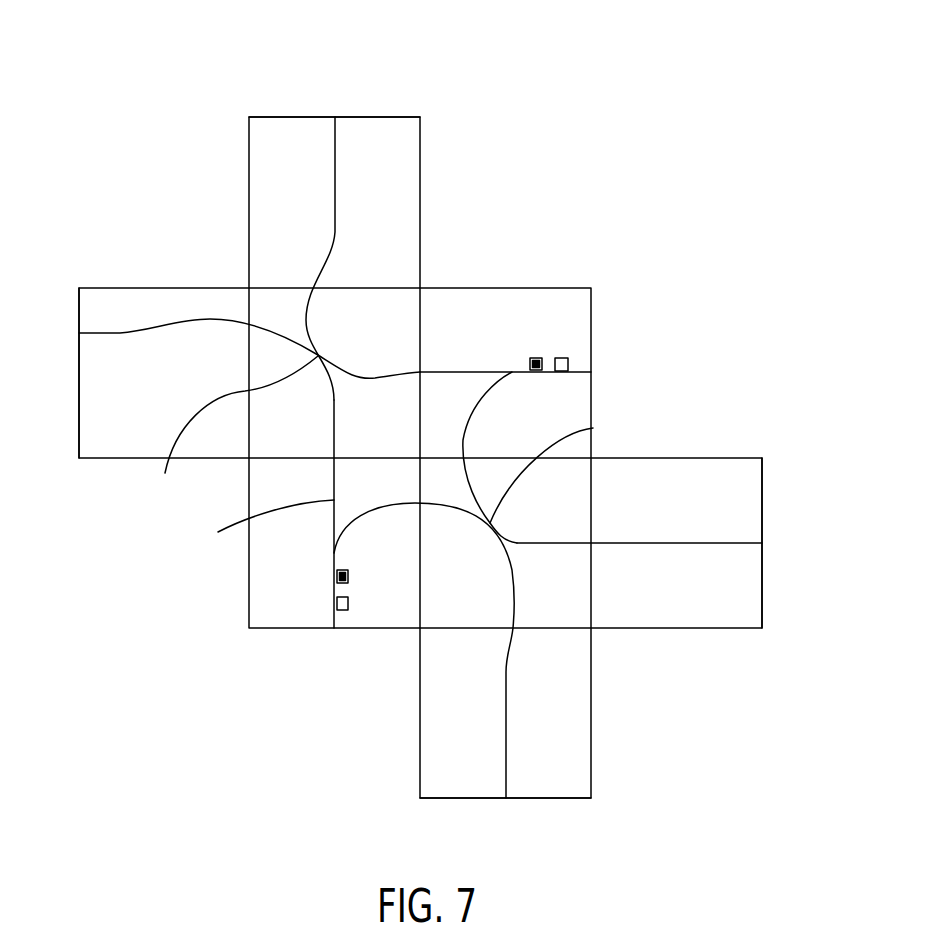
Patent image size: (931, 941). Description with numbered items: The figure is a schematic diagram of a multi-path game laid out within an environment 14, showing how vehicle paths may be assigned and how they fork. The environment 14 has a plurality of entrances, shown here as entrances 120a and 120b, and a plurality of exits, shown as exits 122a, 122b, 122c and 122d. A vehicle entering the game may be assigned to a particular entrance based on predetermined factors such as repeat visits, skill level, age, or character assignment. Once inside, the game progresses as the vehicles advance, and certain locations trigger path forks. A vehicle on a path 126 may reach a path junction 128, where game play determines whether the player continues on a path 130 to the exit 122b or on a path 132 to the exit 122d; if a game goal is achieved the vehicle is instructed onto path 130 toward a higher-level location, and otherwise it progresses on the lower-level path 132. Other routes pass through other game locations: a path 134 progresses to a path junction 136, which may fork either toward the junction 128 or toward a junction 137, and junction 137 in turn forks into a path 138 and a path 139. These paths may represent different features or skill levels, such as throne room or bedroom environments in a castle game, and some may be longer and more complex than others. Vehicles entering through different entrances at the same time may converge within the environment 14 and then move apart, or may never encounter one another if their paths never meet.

The environment 14 is at (158, 134).
The entrance 120a is at (317, 667).
The entrance 120b is at (653, 357).
The exit 122a is at (505, 830).
The exit 122b is at (55, 353).
The exit 122c is at (792, 527).
The exit 122d is at (333, 82).
The path 126 is at (256, 524).
The path junction 128 is at (232, 429).
The path 130 is at (152, 327).
The path 132 is at (335, 192).
The path 134 is at (580, 372).
The path junction 136 is at (513, 372).
The junction 137 is at (593, 428).
The path 138 is at (506, 717).
The path 139 is at (658, 543).